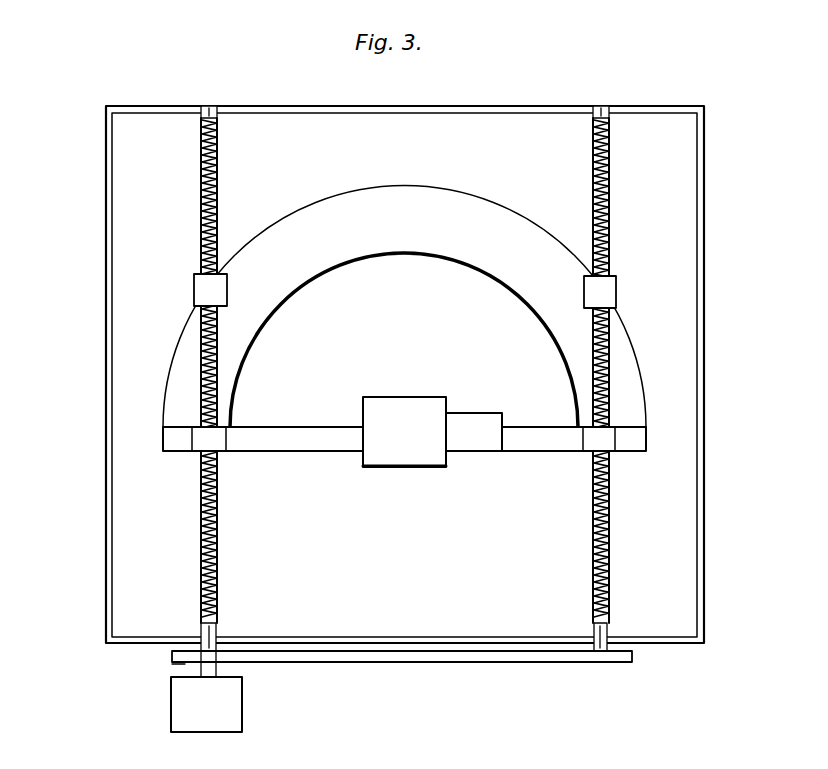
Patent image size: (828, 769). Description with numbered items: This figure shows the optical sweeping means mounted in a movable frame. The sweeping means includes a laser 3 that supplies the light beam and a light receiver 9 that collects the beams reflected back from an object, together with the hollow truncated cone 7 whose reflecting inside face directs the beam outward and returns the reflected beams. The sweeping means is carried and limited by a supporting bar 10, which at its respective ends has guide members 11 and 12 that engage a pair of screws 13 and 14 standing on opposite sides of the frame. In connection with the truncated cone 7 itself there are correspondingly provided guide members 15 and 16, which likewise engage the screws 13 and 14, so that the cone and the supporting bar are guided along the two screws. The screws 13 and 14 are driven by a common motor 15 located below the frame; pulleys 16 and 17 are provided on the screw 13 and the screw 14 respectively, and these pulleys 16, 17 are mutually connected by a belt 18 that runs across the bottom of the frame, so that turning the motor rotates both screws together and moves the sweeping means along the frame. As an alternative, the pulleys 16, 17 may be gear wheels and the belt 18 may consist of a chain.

The laser 3 is at (468, 437).
The hollow truncated cone 7 is at (505, 227).
The light receiver 9 is at (385, 455).
The supporting bar 10 is at (272, 440).
The guide member 11 is at (200, 440).
The guide member 12 is at (605, 442).
The screw 13 is at (216, 565).
The screw 14 is at (592, 575).
The guide member / common motor 15 is at (200, 300).
The guide member / pulley 16 is at (605, 292).
The pulley 17 is at (595, 665).
The belt 18 is at (450, 661).